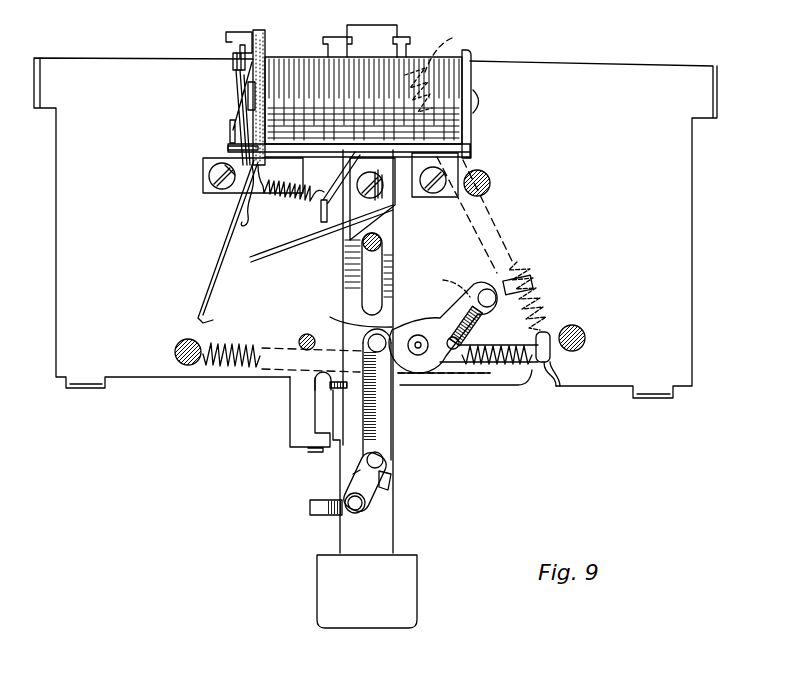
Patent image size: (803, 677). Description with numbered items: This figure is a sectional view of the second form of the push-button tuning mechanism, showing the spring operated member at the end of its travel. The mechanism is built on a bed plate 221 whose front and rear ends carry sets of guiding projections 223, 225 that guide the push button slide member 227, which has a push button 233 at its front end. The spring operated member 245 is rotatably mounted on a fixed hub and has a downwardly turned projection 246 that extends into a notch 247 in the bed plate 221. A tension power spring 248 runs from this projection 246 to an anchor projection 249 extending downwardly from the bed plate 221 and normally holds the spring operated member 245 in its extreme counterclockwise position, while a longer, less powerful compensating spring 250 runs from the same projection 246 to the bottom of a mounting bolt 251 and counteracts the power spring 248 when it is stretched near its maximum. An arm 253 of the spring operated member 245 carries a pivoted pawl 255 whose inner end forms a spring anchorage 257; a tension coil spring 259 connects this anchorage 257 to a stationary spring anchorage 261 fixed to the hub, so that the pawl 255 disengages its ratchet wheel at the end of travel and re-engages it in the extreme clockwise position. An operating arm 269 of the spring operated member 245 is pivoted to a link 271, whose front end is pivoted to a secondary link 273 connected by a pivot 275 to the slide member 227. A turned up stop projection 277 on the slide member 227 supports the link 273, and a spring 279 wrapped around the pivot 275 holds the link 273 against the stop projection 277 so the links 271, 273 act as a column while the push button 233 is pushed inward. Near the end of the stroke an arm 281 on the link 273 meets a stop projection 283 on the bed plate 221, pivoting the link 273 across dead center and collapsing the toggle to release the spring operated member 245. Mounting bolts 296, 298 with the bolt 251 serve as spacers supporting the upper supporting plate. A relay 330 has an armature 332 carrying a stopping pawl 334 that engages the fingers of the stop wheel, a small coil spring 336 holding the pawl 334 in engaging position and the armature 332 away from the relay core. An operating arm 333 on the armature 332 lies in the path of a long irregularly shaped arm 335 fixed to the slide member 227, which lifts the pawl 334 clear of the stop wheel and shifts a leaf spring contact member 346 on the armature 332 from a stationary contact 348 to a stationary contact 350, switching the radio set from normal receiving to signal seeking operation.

The bed plate 221 is at (692, 302).
The guiding projections 223 is at (400, 378).
The guiding projections 225 is at (405, 37).
The push button slide member 227 is at (392, 247).
The push button 233 is at (412, 566).
The spring operated member 245 is at (438, 281).
The downwardly turned projection 246 is at (535, 372).
The notch 247 is at (552, 376).
The tension power spring 248 is at (500, 223).
The anchor projection 249 is at (451, 64).
The compensating spring 250 is at (240, 342).
The mounting bolt 251 is at (186, 338).
The arm 253 is at (482, 288).
The pawl 255 is at (530, 282).
The spring anchorage 257 is at (462, 320).
The tension coil spring 259 is at (532, 300).
The stationary spring anchorage 261 is at (428, 362).
The operating arm 269 is at (344, 306).
The link 271 is at (393, 424).
The secondary link 273 is at (352, 486).
The pivot 275 is at (350, 514).
The stop projection 277 is at (390, 467).
The spring 279 is at (391, 488).
The arm 281 is at (310, 507).
The stop projection 283 is at (306, 449).
The mounting bolt 296 is at (491, 184).
The mounting bolt 298 is at (585, 334).
The relay 330 is at (470, 56).
The armature 332 is at (233, 86).
The operating arm 333 is at (247, 216).
The stopping pawl 334 is at (207, 268).
The irregularly shaped arm 335 is at (256, 262).
The coil spring 336 is at (300, 203).
The leaf spring contact member 346 is at (233, 70).
The stationary contact 348 is at (234, 58).
The stationary contact 350 is at (262, 58).